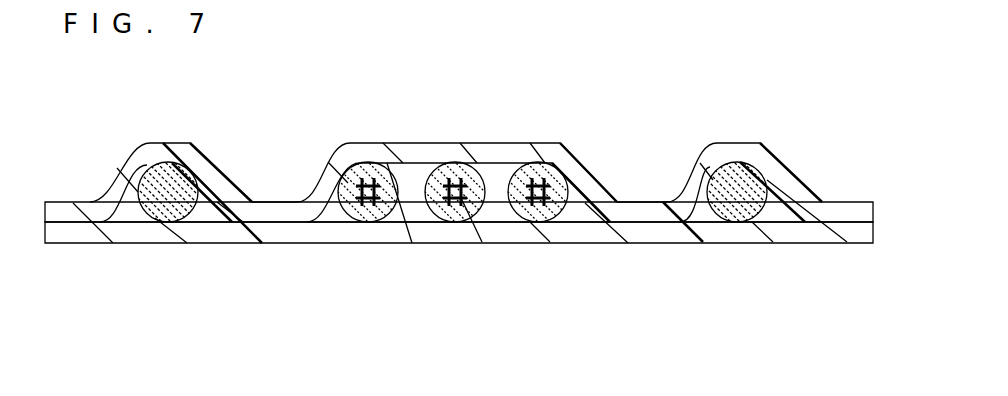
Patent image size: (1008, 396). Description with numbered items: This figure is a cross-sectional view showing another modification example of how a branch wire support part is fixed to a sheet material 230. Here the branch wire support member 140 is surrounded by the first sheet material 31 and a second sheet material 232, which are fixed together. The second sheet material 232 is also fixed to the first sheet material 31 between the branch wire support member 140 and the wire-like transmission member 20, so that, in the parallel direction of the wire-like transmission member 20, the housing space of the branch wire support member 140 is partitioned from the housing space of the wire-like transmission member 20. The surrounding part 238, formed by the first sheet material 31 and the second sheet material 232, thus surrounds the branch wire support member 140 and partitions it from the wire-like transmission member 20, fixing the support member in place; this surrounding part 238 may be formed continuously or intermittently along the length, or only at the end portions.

The branch wire support member 140 is at (167, 163).
The surrounding part 238 is at (217, 161).
The wire-like transmission member 20 is at (400, 203).
The first sheet material 31 is at (881, 300).
The second sheet material 232 is at (852, 208).
The sheet material 230 is at (463, 254).